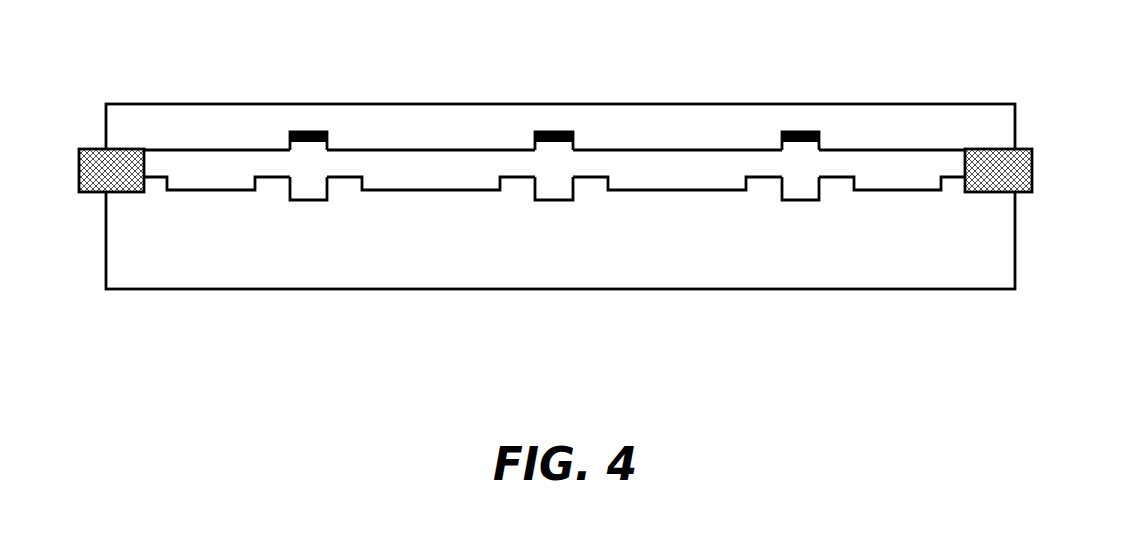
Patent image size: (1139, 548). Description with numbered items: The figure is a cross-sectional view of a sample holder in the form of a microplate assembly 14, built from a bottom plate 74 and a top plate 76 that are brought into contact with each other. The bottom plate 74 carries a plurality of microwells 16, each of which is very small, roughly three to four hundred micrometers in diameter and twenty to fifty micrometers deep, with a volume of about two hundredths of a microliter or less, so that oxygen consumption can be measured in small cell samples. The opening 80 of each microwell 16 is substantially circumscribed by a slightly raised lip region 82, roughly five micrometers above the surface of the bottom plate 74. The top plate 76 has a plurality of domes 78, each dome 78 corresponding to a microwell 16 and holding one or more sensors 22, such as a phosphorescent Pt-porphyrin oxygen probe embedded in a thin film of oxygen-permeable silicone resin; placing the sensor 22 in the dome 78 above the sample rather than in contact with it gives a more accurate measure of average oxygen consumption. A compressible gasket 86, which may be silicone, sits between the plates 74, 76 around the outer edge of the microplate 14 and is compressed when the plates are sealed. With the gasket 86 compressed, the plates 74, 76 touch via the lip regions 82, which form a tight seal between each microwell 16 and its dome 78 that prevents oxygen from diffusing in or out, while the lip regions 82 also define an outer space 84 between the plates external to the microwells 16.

The microplate assembly 14 is at (216, 48).
The microwell 16 is at (560, 200).
The sensor 22 is at (563, 130).
The bottom plate 74 is at (997, 245).
The top plate 76 is at (997, 123).
The dome 78 is at (535, 138).
The opening 80 is at (548, 184).
The lip region 82 is at (593, 183).
The outer space 84 is at (682, 178).
The compressible gasket 86 is at (1030, 175).